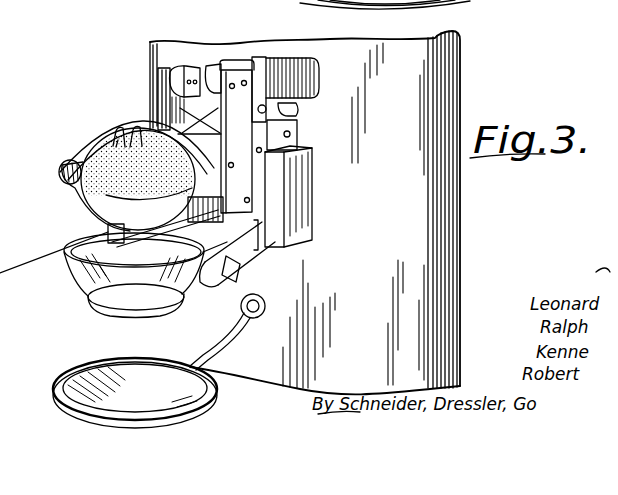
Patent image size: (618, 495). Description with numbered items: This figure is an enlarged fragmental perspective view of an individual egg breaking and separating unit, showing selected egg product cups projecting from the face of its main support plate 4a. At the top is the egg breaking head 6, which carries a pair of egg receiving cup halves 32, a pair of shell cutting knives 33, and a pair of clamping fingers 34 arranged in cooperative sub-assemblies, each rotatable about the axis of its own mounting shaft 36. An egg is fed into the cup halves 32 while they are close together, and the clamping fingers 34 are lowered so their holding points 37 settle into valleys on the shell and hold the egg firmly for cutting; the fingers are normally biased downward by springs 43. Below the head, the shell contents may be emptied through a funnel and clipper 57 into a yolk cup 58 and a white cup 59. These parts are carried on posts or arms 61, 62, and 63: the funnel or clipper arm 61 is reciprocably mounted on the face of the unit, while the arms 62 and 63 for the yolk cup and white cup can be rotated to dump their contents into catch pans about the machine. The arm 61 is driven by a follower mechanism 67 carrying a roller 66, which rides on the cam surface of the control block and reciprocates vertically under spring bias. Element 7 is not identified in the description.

The main support plate 4a is at (397, 146).
The egg breaking head 6 is at (110, 126).
The housing 7 is at (519, 6).
The egg receiving cup halves 32 is at (74, 189).
The shell cutting knives 33 is at (106, 229).
The clamping fingers 34 is at (133, 128).
The mounting shaft 36 is at (240, 66).
The holding points 37 is at (119, 176).
The springs 43 is at (298, 58).
The funnel and clipper 57 is at (72, 264).
The yolk cup 58 is at (87, 298).
The white cup 59 is at (80, 368).
The funnel or clipper arm 61 is at (250, 266).
The yolk cup arm 62 is at (208, 285).
The white cup arm 63 is at (228, 343).
The roller 66 is at (298, 113).
The follower mechanism 67 is at (299, 142).